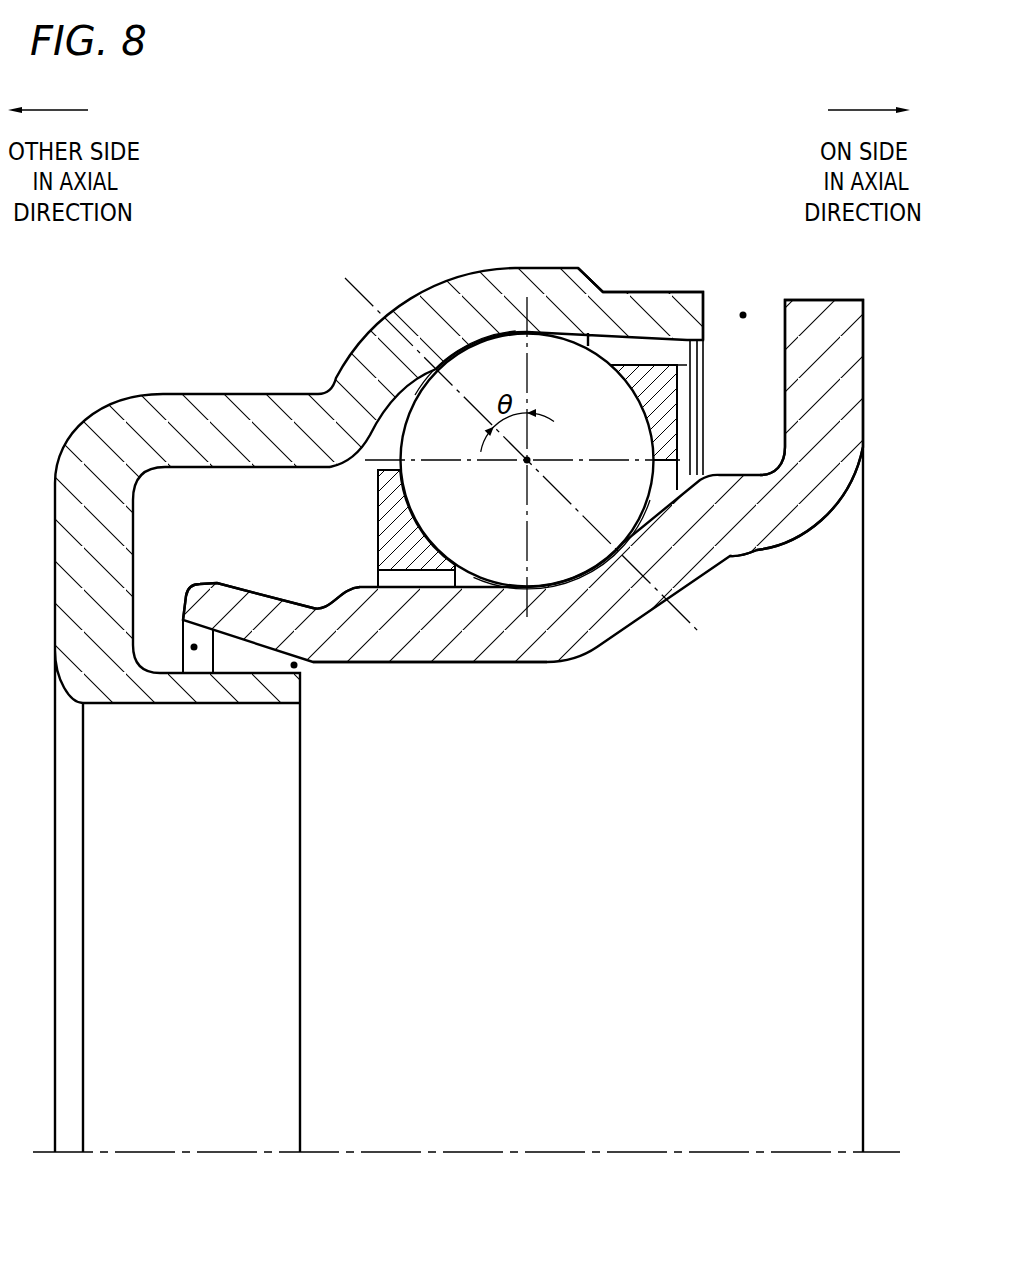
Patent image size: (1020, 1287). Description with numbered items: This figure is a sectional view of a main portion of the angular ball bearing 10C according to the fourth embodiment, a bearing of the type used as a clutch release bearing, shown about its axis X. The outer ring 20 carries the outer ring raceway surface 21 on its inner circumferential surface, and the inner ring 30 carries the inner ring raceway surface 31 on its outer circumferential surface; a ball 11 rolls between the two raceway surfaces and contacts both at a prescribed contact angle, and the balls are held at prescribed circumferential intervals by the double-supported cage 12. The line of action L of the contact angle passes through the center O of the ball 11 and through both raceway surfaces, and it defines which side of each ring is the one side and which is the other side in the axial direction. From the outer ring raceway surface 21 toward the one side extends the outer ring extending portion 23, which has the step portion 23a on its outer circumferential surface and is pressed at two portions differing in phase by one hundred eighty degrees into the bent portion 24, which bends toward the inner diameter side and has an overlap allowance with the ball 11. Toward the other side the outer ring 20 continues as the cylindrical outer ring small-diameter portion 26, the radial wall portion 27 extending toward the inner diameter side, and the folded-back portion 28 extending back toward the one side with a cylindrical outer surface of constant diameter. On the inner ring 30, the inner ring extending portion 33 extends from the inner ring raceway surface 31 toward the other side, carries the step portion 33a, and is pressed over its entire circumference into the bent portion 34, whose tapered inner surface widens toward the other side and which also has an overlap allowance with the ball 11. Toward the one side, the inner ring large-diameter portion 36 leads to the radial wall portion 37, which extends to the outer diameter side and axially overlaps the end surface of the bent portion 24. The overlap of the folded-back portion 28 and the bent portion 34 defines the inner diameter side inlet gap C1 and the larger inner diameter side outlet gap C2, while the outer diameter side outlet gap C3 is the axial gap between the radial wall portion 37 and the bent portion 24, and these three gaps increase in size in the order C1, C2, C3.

The angular ball bearing 10C is at (706, 140).
The ball 11 is at (487, 552).
The double-supported cage 12 is at (403, 542).
The outer ring 20 is at (428, 281).
The outer ring raceway surface 21 is at (489, 345).
The outer ring extending portion 23 is at (565, 297).
The step portion 23a is at (593, 279).
The bent portion 24 is at (672, 320).
The outer ring small-diameter portion 26 is at (222, 420).
The radial wall portion 27 is at (90, 540).
The folded-back portion 28 is at (207, 690).
The inner ring 30 is at (610, 658).
The inner ring raceway surface 31 is at (590, 562).
The inner ring extending portion 33 is at (395, 632).
The step portion 33a is at (327, 583).
The bent portion 34 is at (255, 612).
The inner ring large-diameter portion 36 is at (757, 530).
The radial wall portion 37 is at (840, 350).
The inner diameter side inlet gap C1 is at (296, 668).
The inner diameter side outlet gap C2 is at (192, 648).
The outer diameter side outlet gap C3 is at (743, 313).
The line of action L is at (367, 303).
The center O is at (533, 459).
The axis X is at (807, 1150).